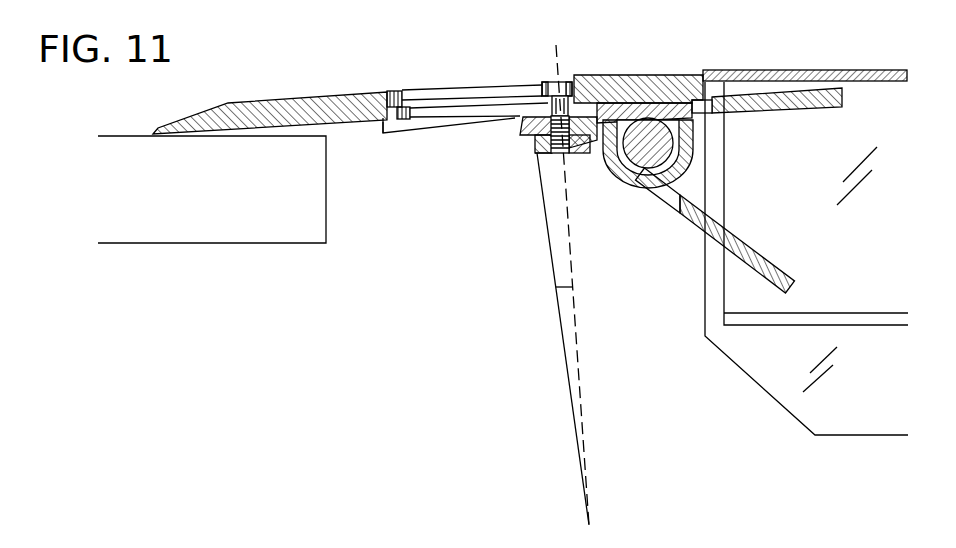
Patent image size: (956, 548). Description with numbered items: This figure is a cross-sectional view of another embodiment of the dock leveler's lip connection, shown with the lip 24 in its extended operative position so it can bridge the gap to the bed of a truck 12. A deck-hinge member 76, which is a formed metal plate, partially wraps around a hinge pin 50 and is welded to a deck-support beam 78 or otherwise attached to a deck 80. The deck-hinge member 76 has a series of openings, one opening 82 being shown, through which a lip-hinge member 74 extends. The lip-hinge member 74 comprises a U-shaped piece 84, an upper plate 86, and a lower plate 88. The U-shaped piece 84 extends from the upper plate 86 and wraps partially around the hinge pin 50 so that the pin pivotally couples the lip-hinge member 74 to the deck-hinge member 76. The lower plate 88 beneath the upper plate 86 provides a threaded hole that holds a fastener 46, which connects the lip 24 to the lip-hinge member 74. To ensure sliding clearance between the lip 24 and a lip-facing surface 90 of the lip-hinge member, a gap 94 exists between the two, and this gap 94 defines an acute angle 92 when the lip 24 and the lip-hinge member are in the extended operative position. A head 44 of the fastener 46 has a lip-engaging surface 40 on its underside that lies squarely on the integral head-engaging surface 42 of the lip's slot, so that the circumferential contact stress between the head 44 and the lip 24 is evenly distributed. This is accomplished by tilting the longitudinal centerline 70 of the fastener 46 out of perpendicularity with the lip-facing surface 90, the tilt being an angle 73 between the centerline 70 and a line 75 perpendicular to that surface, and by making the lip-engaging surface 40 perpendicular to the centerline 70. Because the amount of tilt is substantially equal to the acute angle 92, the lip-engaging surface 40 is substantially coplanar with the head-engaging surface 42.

The truck 12 is at (190, 243).
The lip 24 is at (265, 100).
The head-engaging surface 42 is at (418, 88).
The gap 94 is at (490, 113).
The upper plate 86 is at (520, 121).
The acute angle 92 is at (375, 133).
The lip-engaging surface 40 is at (572, 102).
The deck 80 is at (778, 68).
The lip-facing surface 90 is at (537, 112).
The lip-hinge member 74 is at (535, 145).
The lower plate 88 is at (545, 150).
The centerline 70 is at (566, 157).
The head 44 is at (540, 82).
The fastener 46 is at (566, 78).
The U-shaped piece 84 is at (680, 182).
The hinge pin 50 is at (688, 162).
The opening 82 is at (672, 200).
The deck-hinge member 76 is at (700, 224).
The deck-support beam 78 is at (757, 325).
The angle 73 is at (560, 286).
The line 75 is at (562, 345).